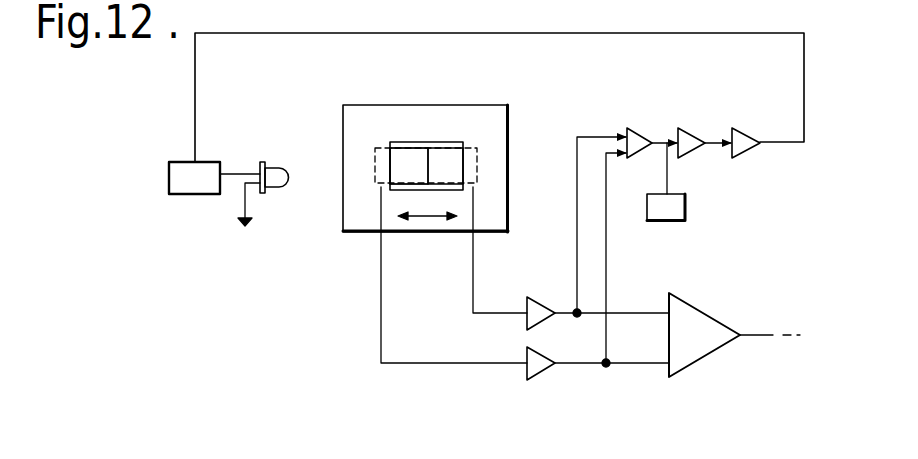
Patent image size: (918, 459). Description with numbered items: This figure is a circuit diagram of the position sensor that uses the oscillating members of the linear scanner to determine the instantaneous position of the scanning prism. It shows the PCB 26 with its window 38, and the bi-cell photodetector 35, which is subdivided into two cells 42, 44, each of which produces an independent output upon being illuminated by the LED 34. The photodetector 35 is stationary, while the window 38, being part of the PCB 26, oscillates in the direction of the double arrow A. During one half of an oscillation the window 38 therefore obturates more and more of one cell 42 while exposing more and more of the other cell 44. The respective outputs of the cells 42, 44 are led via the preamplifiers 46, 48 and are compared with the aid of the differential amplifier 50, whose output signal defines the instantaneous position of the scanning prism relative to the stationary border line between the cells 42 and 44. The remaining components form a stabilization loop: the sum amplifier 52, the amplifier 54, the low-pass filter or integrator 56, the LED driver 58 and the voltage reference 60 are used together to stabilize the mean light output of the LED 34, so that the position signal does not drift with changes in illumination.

The PCB 26 is at (487, 117).
The LED 34 is at (277, 168).
The bi-cell photodetector 35 is at (474, 168).
The window 38 is at (451, 145).
The cell 42 is at (435, 153).
The cell 44 is at (403, 160).
The preamplifier 46 is at (540, 305).
The preamplifier 48 is at (538, 358).
The differential amplifier 50 is at (696, 325).
The sum amplifier 52 is at (642, 140).
The amplifier 54 is at (698, 140).
The low-pass filter or integrator 56 is at (745, 140).
The LED driver 58 is at (190, 198).
The voltage reference 60 is at (677, 208).
The double arrow A is at (425, 219).